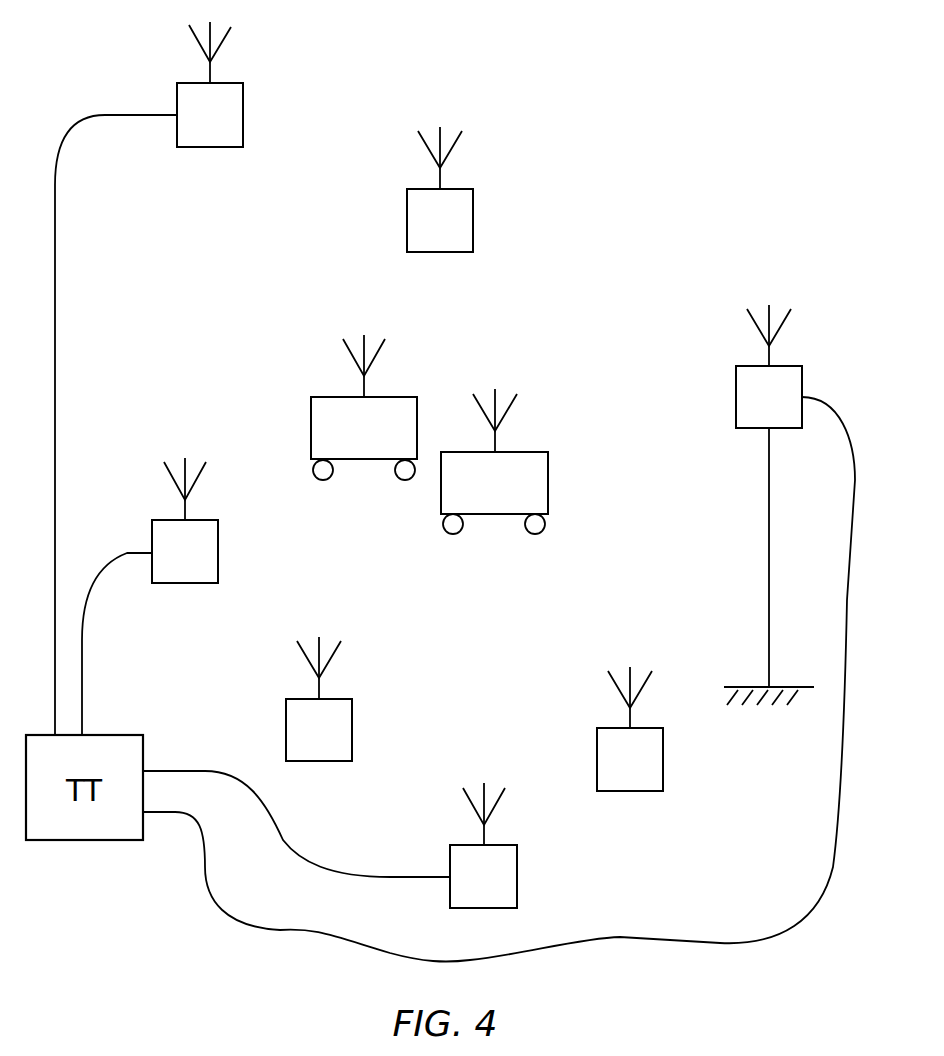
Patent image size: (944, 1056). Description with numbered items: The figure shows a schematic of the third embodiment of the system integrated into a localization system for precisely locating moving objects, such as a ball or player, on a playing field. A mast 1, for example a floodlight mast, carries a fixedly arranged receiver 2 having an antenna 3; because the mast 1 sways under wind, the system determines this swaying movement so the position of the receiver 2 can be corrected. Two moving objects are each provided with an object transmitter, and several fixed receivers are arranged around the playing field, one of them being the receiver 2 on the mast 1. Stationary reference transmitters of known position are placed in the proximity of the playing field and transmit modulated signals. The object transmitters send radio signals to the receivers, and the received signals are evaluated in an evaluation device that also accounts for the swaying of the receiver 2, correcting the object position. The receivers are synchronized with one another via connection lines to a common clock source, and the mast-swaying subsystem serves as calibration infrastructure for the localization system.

The mast 1 is at (769, 557).
The receiver 2 is at (802, 383).
The antenna 3 is at (781, 326).